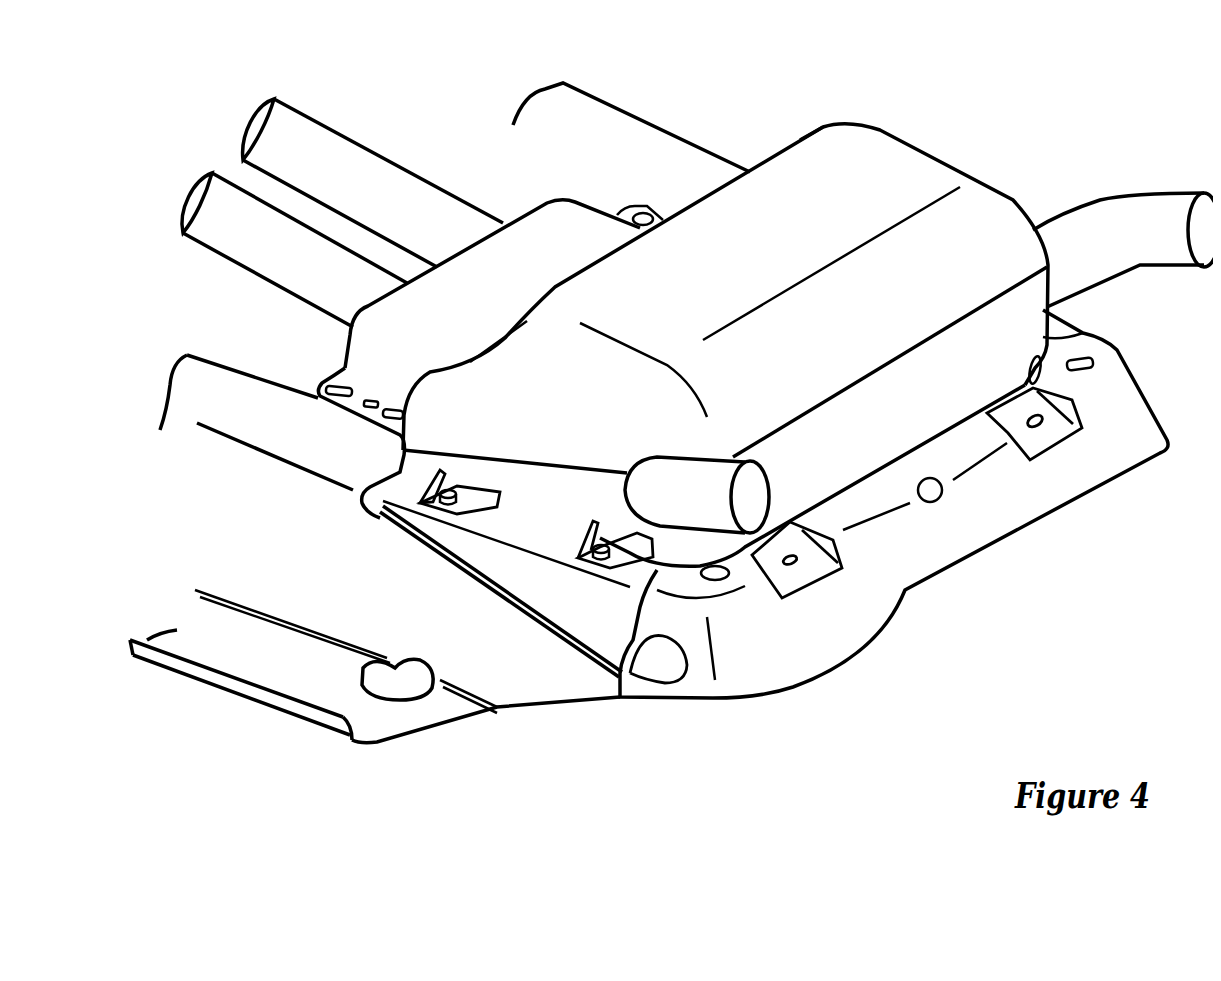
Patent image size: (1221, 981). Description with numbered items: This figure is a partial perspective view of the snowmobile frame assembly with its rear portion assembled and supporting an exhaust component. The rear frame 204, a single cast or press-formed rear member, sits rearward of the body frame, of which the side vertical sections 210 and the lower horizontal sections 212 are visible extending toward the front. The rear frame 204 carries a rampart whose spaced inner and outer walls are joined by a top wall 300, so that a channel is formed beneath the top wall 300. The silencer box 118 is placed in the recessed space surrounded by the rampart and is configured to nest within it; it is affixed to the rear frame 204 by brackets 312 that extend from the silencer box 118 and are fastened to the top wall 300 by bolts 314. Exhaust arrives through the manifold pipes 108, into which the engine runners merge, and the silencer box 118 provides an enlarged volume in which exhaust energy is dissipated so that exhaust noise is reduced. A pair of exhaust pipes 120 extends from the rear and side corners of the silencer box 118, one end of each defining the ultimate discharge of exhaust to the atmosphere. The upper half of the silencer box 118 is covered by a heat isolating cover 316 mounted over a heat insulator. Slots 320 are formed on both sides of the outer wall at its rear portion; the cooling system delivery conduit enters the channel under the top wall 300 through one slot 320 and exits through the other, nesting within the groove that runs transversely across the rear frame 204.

The manifold pipes 108 is at (277, 227).
The heat isolating cover 316 is at (787, 193).
The rear frame 204 is at (1022, 193).
The exhaust pipes 120 is at (1167, 243).
The silencer box 118 is at (937, 407).
The top wall 300 is at (873, 503).
The slots 320 is at (657, 667).
The side vertical sections 210 is at (280, 550).
The lower horizontal sections 212 is at (297, 670).
The brackets 312 is at (420, 493).
The bolts 314 is at (447, 507).